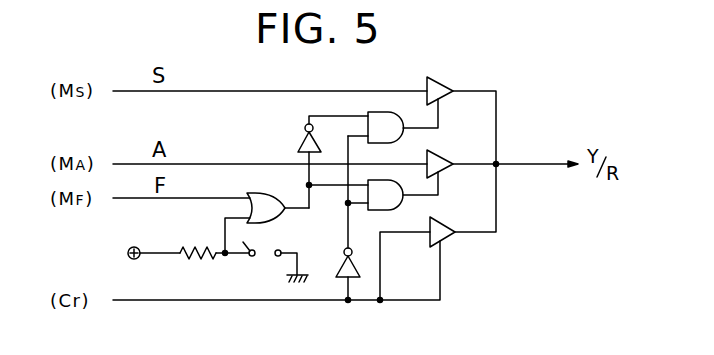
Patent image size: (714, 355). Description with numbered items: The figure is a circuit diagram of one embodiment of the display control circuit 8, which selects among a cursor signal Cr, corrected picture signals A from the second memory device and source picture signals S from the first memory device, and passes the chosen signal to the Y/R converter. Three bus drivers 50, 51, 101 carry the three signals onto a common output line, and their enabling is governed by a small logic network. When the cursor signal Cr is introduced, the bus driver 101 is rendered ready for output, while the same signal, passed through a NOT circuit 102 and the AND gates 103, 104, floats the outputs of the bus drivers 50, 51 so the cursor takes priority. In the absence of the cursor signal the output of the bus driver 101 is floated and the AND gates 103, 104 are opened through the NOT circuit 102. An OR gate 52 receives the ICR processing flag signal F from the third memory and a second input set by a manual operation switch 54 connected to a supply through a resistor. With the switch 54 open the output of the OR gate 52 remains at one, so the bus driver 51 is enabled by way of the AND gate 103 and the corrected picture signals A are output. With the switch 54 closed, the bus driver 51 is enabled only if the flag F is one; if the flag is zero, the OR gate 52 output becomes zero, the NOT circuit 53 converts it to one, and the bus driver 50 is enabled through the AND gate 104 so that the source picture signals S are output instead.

The display control circuit 8 is at (504, 102).
The bus driver 50 is at (446, 86).
The bus driver 51 is at (447, 172).
The OR gate 52 is at (279, 197).
The NOT circuit 53 is at (300, 143).
The manual operation switch 54 is at (262, 257).
The bus driver 101 is at (450, 238).
The NOT circuit 102 is at (337, 257).
The AND gate 103 is at (384, 207).
The AND gate 104 is at (383, 112).